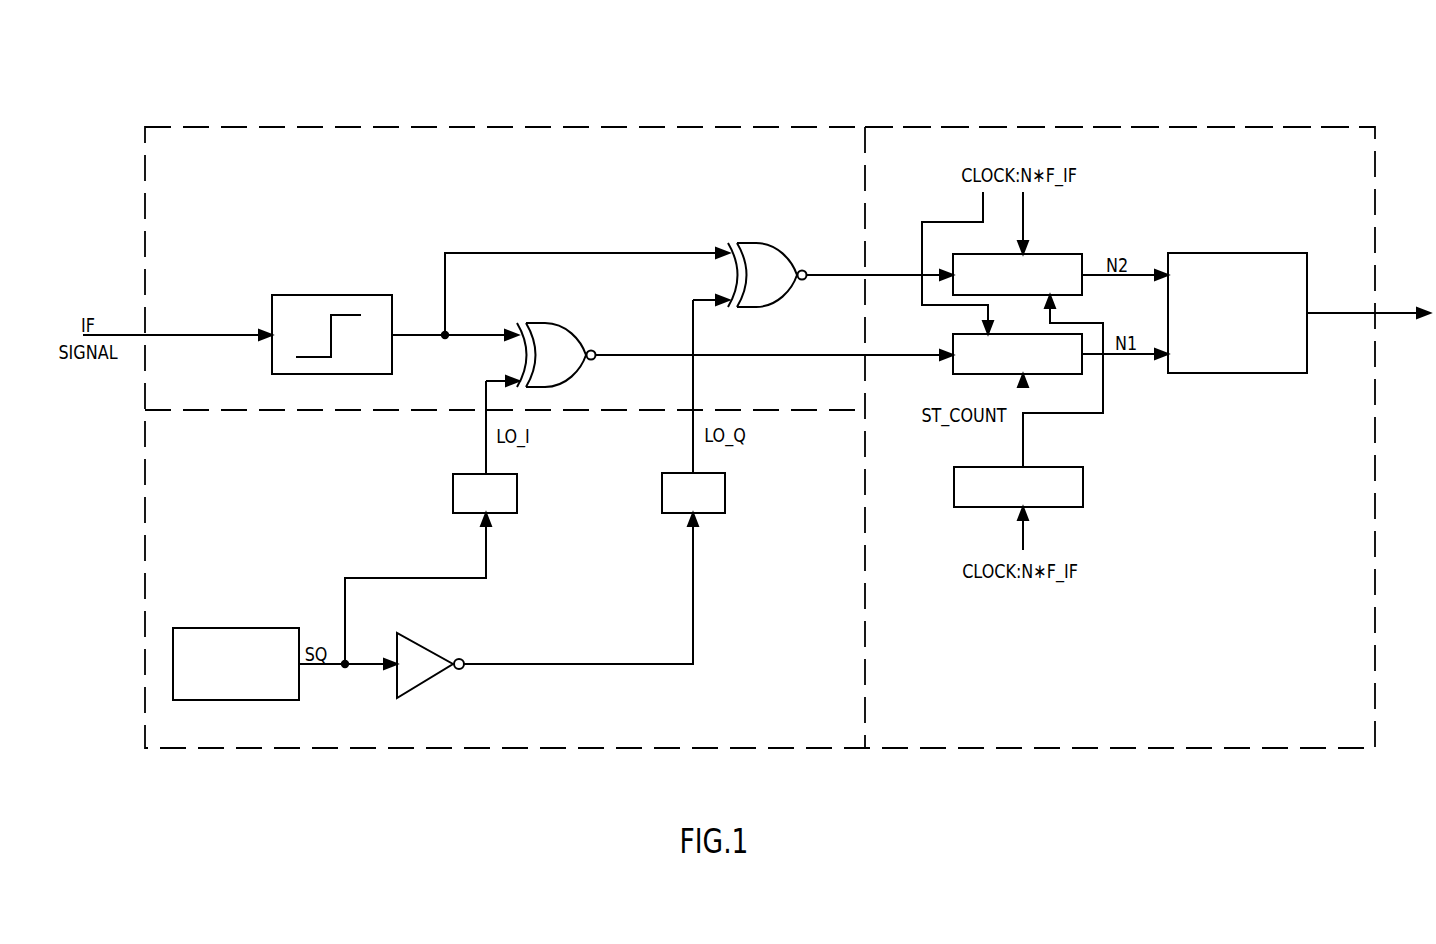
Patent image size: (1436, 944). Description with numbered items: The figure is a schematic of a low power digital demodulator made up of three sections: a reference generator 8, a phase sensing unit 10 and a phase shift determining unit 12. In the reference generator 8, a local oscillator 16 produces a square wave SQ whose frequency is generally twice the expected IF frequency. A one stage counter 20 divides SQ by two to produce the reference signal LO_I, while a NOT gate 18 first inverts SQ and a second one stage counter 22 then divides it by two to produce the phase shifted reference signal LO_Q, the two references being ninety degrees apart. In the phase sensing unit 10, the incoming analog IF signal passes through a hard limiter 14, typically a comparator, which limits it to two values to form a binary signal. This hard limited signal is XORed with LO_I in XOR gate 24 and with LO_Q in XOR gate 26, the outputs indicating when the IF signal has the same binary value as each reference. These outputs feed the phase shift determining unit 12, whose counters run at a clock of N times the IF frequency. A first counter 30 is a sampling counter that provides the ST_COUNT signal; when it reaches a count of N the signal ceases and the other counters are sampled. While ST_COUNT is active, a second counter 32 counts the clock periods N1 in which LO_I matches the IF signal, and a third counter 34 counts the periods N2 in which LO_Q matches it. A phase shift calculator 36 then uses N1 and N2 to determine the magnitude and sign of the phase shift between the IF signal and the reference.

The reference generator 8 is at (172, 497).
The phase sensing unit 10 is at (608, 137).
The phase shift determining unit 12 is at (1222, 133).
The hard limiter 14 is at (311, 293).
The local oscillator 16 is at (214, 628).
The NOT gate 18 is at (420, 634).
The one stage counter 20 is at (518, 497).
The one stage counter 22 is at (726, 490).
The XOR gate 24 is at (563, 333).
The XOR gate 26 is at (757, 250).
The first counter 30 is at (1060, 467).
The second counter 32 is at (972, 333).
The third counter 34 is at (1062, 252).
The phase shift calculator 36 is at (1283, 250).